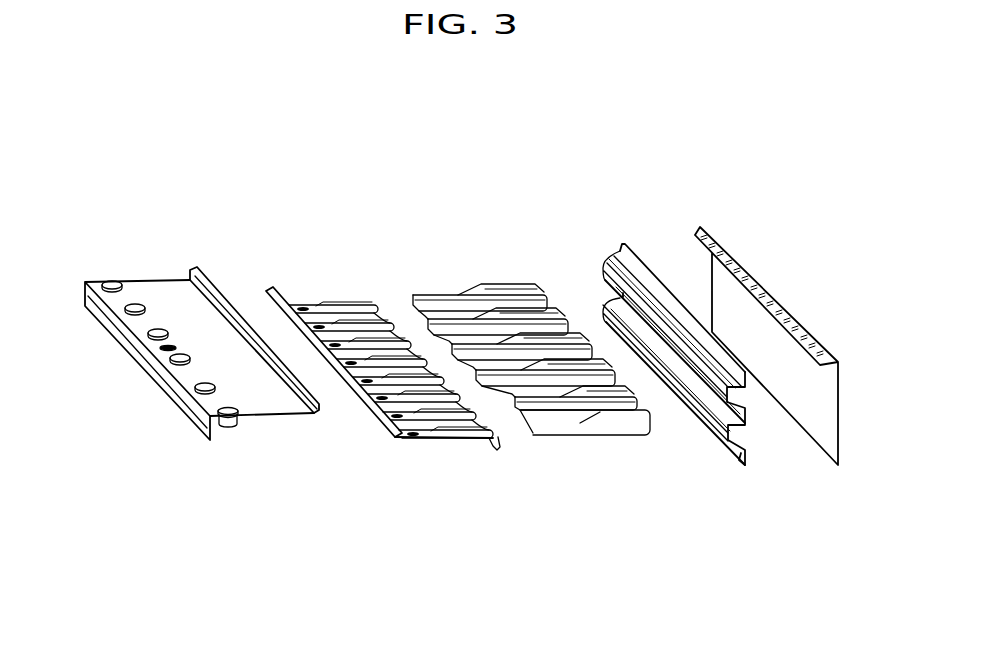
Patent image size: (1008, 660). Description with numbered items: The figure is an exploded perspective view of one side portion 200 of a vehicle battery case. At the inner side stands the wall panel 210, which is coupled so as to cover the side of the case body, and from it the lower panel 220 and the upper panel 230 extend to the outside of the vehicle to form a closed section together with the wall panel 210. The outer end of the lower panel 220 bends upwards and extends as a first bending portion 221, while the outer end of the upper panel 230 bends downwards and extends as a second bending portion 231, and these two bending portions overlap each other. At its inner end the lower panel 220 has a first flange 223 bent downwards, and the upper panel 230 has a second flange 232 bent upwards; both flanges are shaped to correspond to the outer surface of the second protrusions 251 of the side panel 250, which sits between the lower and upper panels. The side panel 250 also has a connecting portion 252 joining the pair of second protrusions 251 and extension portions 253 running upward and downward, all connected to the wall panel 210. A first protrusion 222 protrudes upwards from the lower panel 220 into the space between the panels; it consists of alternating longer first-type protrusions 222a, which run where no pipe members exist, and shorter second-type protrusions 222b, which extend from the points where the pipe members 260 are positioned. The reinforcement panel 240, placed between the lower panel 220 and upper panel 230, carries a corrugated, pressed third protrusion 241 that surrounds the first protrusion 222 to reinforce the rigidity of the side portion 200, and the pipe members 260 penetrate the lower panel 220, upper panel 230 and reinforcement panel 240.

The side portion 200 is at (278, 123).
The wall panel 210 is at (712, 268).
The lower panel 220 is at (415, 446).
The first bending portion 221 is at (373, 410).
The first protrusion 222 is at (477, 542).
The 1-1 protrusion 222a is at (497, 437).
The 1-2 protrusion 222b is at (465, 438).
The first flange 223 is at (490, 440).
The upper panel 230 is at (173, 277).
The second bending portion 231 is at (183, 407).
The second flange 232 is at (217, 295).
The reinforcement panel 240 is at (500, 278).
The third protrusion 241 is at (617, 415).
The side panel 250 is at (612, 243).
The second protrusion 251 is at (742, 398).
The connecting portion 252 is at (715, 433).
The extension portion 253 is at (648, 268).
The pipe member 260 is at (158, 329).